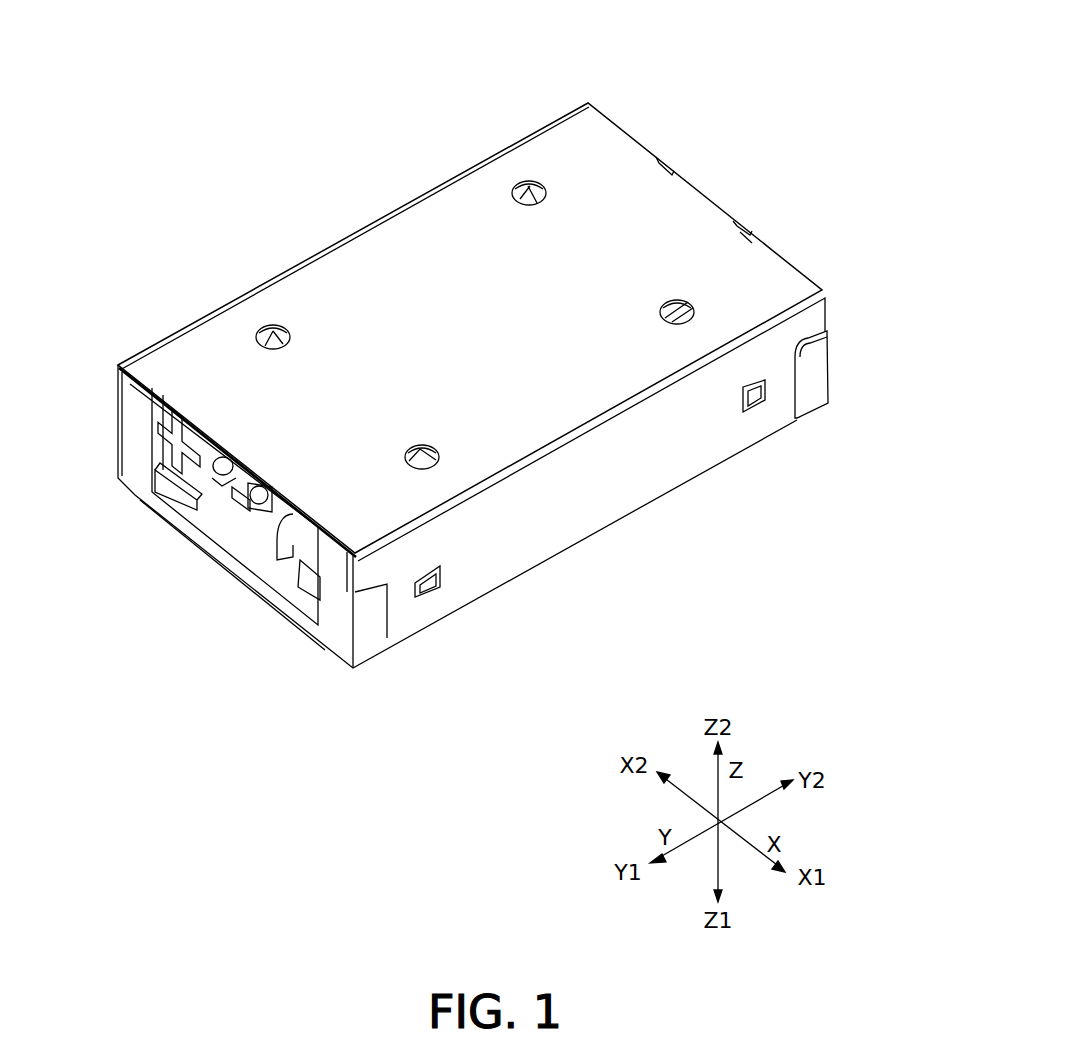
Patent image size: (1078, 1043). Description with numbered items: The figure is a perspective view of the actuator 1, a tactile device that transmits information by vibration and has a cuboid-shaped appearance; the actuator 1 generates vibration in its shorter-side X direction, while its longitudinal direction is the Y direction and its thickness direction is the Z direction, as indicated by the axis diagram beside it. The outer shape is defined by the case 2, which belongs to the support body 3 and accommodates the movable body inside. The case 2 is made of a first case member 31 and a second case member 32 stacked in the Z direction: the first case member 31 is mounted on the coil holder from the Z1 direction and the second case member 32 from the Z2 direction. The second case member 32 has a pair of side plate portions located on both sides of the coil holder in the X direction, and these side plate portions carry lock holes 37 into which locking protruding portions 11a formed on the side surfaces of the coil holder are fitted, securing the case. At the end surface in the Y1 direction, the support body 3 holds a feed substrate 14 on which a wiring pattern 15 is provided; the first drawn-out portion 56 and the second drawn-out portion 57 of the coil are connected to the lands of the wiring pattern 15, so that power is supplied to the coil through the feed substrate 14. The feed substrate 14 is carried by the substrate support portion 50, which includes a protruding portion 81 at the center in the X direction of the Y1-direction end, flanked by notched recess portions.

The actuator 1 is at (198, 119).
The case 2 is at (922, 250).
The support body 3 is at (670, 144).
The first case member 31 is at (660, 497).
The second case member 32 is at (745, 273).
The locking protruding portion 11a is at (434, 588).
The lock hole 37 is at (432, 590).
The feed substrate 14 is at (192, 400).
The wiring pattern 15 is at (182, 440).
The substrate support portion 50 is at (130, 394).
The first drawn-out portion 56 is at (258, 522).
The second drawn-out portion 57 is at (232, 474).
The protruding portion 81 is at (237, 498).